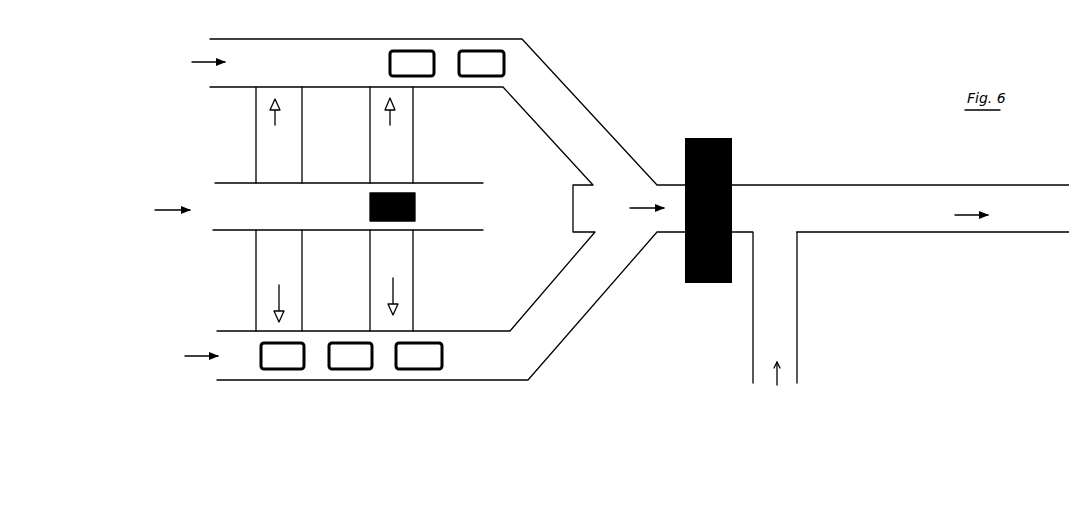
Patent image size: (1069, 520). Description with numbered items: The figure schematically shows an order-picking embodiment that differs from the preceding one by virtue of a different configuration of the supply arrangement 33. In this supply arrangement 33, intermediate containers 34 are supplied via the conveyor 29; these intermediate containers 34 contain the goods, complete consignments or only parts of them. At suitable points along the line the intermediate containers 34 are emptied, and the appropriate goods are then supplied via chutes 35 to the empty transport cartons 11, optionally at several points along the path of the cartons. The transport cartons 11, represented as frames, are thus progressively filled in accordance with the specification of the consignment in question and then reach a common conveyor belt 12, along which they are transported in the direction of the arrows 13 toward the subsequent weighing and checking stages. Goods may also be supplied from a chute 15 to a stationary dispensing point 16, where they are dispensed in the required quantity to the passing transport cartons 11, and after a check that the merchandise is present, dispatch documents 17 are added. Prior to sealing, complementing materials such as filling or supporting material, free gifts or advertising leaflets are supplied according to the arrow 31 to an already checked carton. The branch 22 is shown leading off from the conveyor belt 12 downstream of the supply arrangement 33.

The transport carton 11 is at (342, 0).
The conveyor belt 12 is at (930, 196).
The arrows 13 is at (970, 206).
The chute 15 is at (706, 128).
The dispensing point 16 is at (287, 331).
The dispatch documents 17 is at (265, 51).
The branch duct 22 is at (788, 333).
The supply conveyor 29 is at (215, 190).
The arrow 31 is at (782, 375).
The supply arrangement 33 is at (172, 140).
The intermediate containers 34 is at (417, 193).
The chutes 35 is at (295, 143).